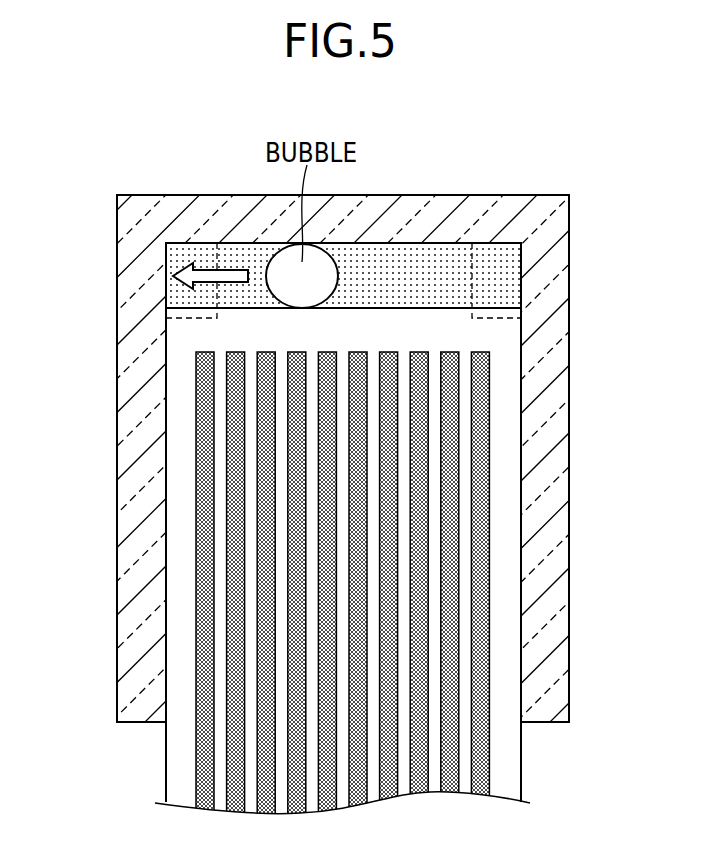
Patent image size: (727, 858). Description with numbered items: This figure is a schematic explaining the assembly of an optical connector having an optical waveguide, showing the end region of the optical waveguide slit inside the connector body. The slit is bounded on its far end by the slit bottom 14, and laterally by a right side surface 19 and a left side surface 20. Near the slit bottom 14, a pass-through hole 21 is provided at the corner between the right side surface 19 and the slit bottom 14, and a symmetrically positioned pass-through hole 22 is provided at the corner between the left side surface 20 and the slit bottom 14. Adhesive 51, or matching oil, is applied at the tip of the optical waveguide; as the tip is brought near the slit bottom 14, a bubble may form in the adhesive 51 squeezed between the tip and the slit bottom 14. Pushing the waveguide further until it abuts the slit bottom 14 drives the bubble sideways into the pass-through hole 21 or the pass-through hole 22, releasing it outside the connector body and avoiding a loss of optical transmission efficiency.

The slit bottom 14 is at (375, 243).
The right side surface 19 is at (515, 374).
The left side surface 20 is at (168, 369).
The pass-through hole 21 is at (460, 262).
The pass-through hole 22 is at (216, 265).
The adhesive 51 is at (433, 268).